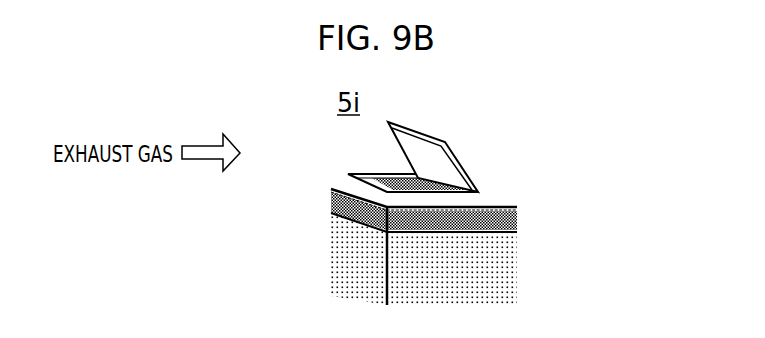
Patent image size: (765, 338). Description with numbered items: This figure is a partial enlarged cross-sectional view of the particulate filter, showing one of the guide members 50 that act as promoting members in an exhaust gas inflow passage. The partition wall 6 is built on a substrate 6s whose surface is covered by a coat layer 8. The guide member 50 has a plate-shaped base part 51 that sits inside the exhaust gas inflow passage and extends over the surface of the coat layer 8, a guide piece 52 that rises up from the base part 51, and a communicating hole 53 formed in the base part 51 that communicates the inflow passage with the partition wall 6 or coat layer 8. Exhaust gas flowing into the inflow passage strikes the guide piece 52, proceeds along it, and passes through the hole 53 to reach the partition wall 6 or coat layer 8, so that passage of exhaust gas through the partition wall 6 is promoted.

The guide member 50 is at (523, 168).
The base part 51 is at (458, 200).
The guide piece 52 is at (430, 131).
The communicating hole 53 is at (385, 177).
The partition wall 6 is at (622, 274).
The substrate 6s is at (517, 280).
The coat layer 8 is at (517, 218).